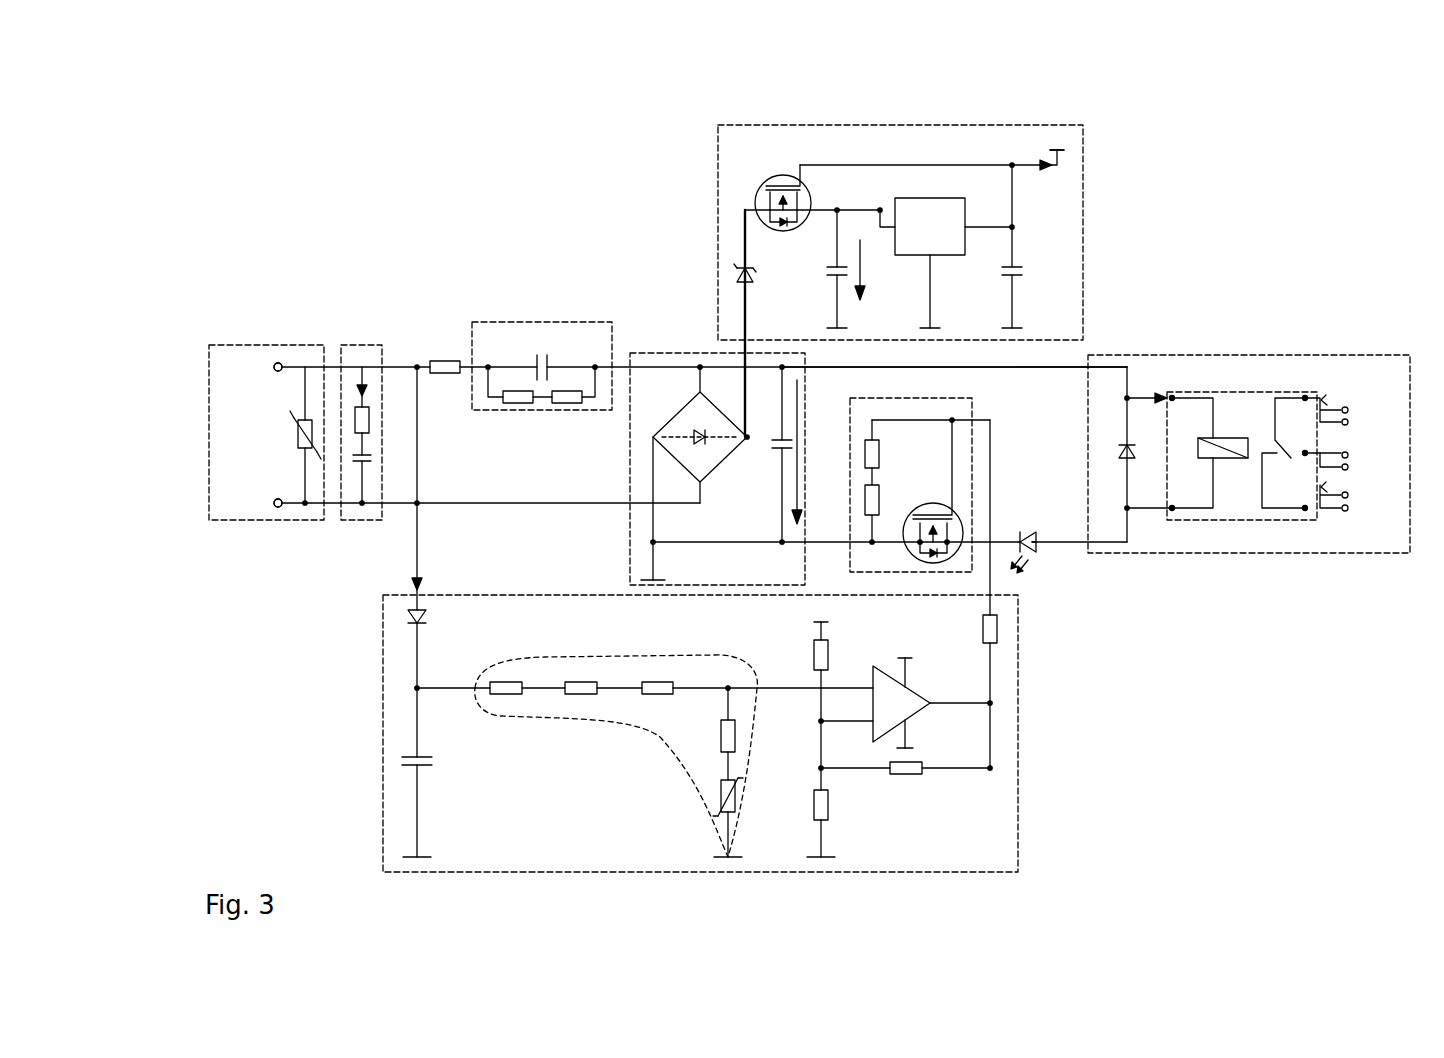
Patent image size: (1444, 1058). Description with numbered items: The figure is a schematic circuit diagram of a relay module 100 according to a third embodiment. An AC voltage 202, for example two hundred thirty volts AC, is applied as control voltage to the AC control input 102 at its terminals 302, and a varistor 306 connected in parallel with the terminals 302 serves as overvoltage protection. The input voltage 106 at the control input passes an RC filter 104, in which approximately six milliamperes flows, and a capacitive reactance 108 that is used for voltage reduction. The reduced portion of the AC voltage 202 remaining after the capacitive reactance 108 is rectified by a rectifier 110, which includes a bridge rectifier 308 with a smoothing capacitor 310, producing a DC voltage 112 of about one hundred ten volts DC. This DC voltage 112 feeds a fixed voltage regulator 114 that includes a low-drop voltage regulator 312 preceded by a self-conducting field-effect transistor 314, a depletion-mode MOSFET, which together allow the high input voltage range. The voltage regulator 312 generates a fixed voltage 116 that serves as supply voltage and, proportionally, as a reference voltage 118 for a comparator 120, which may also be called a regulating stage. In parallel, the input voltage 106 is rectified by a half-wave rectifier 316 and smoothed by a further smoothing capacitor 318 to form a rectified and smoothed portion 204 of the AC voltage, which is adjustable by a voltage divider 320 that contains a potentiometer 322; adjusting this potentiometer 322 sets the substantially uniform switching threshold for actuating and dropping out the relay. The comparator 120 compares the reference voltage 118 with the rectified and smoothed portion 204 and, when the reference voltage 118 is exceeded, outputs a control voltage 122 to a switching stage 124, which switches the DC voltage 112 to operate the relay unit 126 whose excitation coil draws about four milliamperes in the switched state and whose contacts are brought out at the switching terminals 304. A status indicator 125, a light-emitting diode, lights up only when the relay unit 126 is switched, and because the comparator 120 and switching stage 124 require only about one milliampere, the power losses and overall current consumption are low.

The relay module 100 is at (214, 105).
The AC control input 102 is at (262, 345).
The RC filter 104 is at (358, 345).
The input voltage 106 is at (414, 560).
The capacitive reactance 108 is at (540, 322).
The rectifier 110 is at (710, 348).
The DC voltage 112 is at (745, 233).
The fixed voltage regulator 114 is at (718, 158).
The fixed voltage 116 is at (1063, 155).
The reference voltage 118 is at (842, 770).
The comparator 120 is at (382, 715).
The control voltage 122 is at (990, 578).
The switching stage 124 is at (968, 443).
The status indicator 125 is at (1032, 525).
The relay unit 126 is at (1270, 355).
The AC voltage 202 is at (208, 440).
The rectified and smoothed portion of the AC voltage 204 is at (765, 688).
The terminals 302 is at (232, 366).
The switching terminals 304 is at (1372, 495).
The varistor 306 is at (295, 432).
The bridge rectifier 308 is at (677, 410).
The smoothing capacitor 310 is at (790, 440).
The voltage regulator 312 is at (945, 198).
The self-conducting field-effect transistor 314 is at (778, 175).
The half-wave rectifier 316 is at (410, 615).
The further smoothing capacitor 318 is at (405, 757).
The voltage divider 320 is at (630, 730).
The potentiometer 322 is at (716, 797).